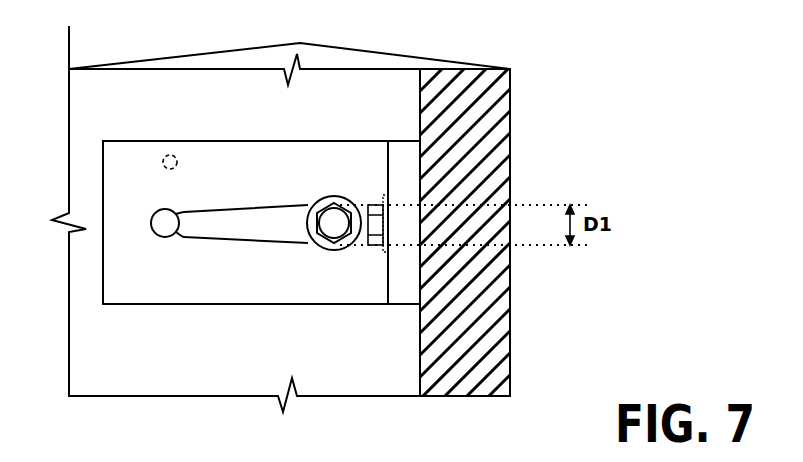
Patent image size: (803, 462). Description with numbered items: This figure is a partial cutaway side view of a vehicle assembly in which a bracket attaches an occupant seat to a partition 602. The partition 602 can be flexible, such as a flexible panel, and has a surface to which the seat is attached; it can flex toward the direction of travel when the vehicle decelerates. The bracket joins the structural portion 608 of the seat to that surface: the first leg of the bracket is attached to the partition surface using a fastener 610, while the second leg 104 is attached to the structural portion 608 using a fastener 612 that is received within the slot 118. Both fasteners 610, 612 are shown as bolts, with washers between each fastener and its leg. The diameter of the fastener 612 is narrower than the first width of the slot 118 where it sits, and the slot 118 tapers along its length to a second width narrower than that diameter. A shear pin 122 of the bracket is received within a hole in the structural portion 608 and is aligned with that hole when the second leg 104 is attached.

The second leg 104 is at (243, 140).
The slot 118 is at (185, 212).
The shear pin 122 is at (170, 155).
The partition 602 is at (460, 69).
The structural portion 608 is at (110, 396).
The fastener 610 is at (378, 248).
The fastener 612 is at (333, 203).